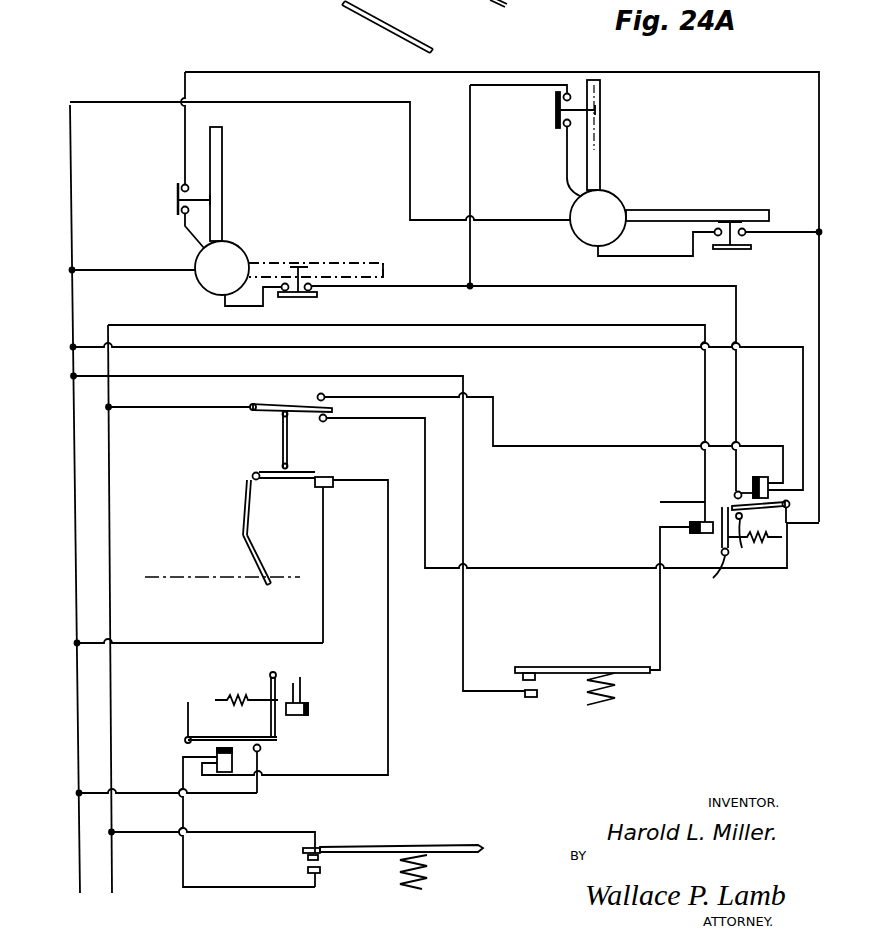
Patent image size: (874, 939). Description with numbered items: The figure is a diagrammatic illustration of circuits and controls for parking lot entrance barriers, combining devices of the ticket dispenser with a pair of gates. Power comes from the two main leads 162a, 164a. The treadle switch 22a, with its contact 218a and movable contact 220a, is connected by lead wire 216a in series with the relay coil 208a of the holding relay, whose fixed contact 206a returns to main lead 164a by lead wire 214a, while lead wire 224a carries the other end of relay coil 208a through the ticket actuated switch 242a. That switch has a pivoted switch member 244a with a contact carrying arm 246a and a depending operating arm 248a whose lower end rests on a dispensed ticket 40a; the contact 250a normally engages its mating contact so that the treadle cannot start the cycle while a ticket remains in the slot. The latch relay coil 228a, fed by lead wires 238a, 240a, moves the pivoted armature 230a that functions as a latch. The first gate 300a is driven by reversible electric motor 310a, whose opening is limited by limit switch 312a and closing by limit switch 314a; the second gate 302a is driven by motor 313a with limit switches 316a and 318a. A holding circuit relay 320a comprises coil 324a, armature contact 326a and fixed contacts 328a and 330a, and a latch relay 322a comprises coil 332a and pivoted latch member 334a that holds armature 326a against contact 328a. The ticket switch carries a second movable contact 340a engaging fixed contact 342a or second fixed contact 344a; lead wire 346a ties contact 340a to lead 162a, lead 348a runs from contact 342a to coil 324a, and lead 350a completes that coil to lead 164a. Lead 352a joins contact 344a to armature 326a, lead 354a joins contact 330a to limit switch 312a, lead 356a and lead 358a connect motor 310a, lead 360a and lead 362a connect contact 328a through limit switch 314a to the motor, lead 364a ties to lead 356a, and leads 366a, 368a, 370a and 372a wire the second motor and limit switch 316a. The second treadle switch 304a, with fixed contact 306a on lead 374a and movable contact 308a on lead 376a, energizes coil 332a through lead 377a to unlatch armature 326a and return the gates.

The treadle switch 22a is at (372, 22).
The dispensed ticket 40a is at (212, 582).
The main lead 162a is at (109, 497).
The main lead 164a is at (74, 485).
The fixed contact 206a is at (261, 750).
The relay coil 208a is at (226, 772).
The lead wire 214a is at (265, 790).
The lead wire 216a is at (242, 888).
The contact 218a is at (322, 870).
The movable contact 220a is at (322, 850).
The lead wire 224a is at (389, 746).
The relay coil 228a is at (309, 707).
The armature 230a is at (280, 722).
The lead wire 238a is at (293, 683).
The lead wire 240a is at (300, 680).
The ticket actuated switch 242a is at (248, 468).
The switch member 244a is at (246, 496).
The contact carrying arm 246a is at (292, 468).
The operating arm 248a is at (244, 542).
The contact 250a is at (330, 476).
The gate 300a is at (223, 190).
The second gate 302a is at (605, 138).
The second treadle switch 304a is at (618, 666).
The fixed contact 306a is at (530, 698).
The movable contact 308a is at (530, 672).
The reversible electric motor 310a is at (200, 287).
The limit switch 312a is at (590, 240).
The reversible electric motor 313a is at (177, 198).
The limit switch 314a is at (318, 299).
The limit switch 316a is at (552, 112).
The limit switch 318a is at (757, 250).
The holding circuit relay 320a is at (762, 476).
The latch relay 322a is at (721, 540).
The coil 324a is at (730, 462).
The armature contact 326a is at (808, 494).
The fixed contact 328a is at (734, 494).
The fixed contact 330a is at (757, 540).
The coil 332a is at (660, 527).
The latch member 334a is at (724, 572).
The second movable contact 340a is at (290, 400).
The fixed contact 342a is at (326, 394).
The second fixed contact 344a is at (327, 422).
The lead wire 346a is at (163, 410).
The lead 348a is at (580, 425).
The lead 350a is at (625, 348).
The lead 352a is at (550, 567).
The lead 354a is at (184, 145).
The lead 356a is at (186, 230).
The lead 358a is at (130, 276).
The lead 360a is at (452, 290).
The lead 362a is at (228, 312).
The lead 364a is at (790, 230).
The lead 366a is at (634, 258).
The lead 368a is at (522, 220).
The lead 370a is at (565, 160).
The lead 372a is at (470, 168).
The lead 374a is at (464, 610).
The lead 376a is at (661, 614).
The lead 377a is at (705, 409).